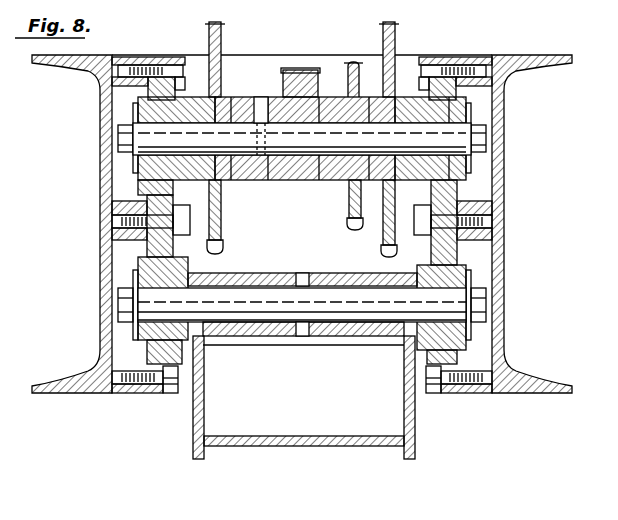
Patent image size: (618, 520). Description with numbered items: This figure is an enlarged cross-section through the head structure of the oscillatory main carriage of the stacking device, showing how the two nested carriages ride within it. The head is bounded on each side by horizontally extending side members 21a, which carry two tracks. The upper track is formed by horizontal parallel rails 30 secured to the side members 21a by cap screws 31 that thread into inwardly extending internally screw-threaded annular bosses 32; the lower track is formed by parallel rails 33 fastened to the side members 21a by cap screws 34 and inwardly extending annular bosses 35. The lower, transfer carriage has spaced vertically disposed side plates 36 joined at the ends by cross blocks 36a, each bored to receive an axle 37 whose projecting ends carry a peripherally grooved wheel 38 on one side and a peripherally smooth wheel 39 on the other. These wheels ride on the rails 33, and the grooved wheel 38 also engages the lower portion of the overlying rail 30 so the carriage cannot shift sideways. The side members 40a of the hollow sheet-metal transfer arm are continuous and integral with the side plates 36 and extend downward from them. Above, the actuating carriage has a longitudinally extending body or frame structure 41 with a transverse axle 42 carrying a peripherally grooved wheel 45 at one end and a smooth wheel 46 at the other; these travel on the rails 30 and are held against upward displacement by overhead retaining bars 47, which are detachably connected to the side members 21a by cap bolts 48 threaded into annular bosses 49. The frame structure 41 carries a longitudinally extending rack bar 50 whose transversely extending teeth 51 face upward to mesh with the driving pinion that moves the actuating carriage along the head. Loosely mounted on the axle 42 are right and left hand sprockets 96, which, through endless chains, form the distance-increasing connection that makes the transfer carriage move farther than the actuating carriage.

The side members 21a is at (104, 200).
The rails 30 is at (160, 200).
The cap screws 31 is at (162, 222).
The annular bosses 32 is at (130, 248).
The rails 33 is at (170, 393).
The cap screws 34 is at (143, 384).
The annular bosses 35 is at (118, 390).
The side plates 36 is at (205, 405).
The cross blocks 36a is at (258, 274).
The axle 37 is at (268, 306).
The peripherally grooved wheel 38 is at (155, 335).
The peripherally smooth wheel 39 is at (455, 281).
The side members 40a is at (196, 452).
The body or frame structure 41 is at (276, 106).
The transverse axle 42 is at (294, 140).
The peripherally grooved wheel 45 is at (150, 104).
The wheel 46 is at (452, 105).
The retaining bars 47 is at (166, 60).
The cap bolts 48 is at (148, 68).
The annular bosses 49 is at (133, 61).
The rack bar 50 is at (318, 80).
The teeth 51 is at (292, 68).
The sprockets 96 is at (222, 242).